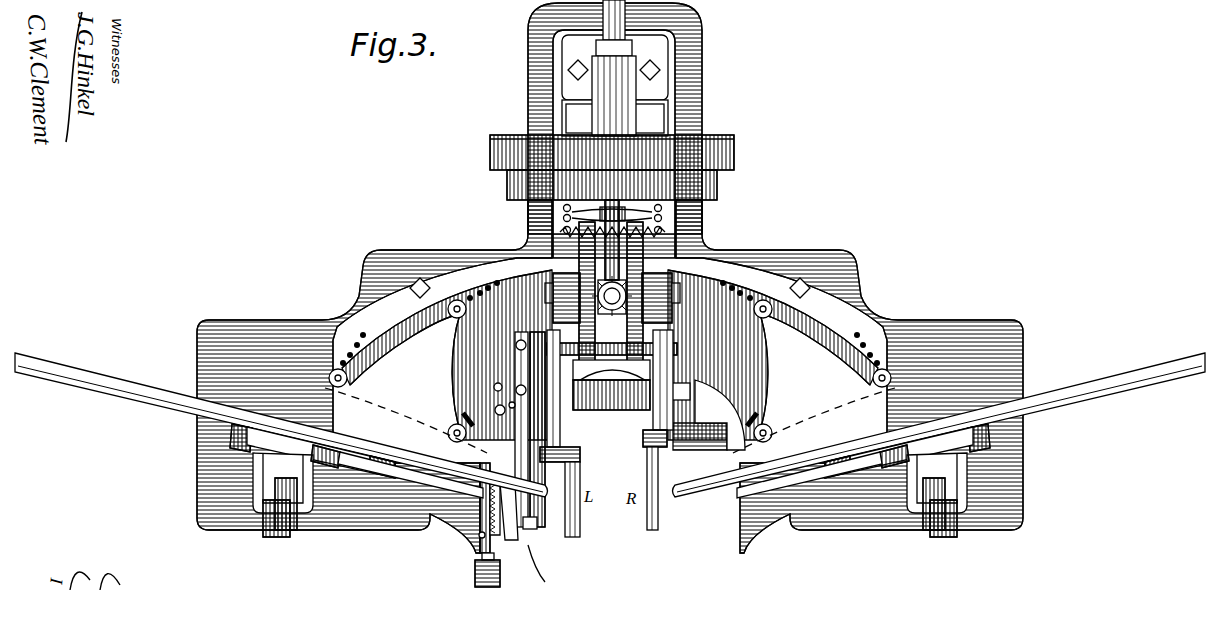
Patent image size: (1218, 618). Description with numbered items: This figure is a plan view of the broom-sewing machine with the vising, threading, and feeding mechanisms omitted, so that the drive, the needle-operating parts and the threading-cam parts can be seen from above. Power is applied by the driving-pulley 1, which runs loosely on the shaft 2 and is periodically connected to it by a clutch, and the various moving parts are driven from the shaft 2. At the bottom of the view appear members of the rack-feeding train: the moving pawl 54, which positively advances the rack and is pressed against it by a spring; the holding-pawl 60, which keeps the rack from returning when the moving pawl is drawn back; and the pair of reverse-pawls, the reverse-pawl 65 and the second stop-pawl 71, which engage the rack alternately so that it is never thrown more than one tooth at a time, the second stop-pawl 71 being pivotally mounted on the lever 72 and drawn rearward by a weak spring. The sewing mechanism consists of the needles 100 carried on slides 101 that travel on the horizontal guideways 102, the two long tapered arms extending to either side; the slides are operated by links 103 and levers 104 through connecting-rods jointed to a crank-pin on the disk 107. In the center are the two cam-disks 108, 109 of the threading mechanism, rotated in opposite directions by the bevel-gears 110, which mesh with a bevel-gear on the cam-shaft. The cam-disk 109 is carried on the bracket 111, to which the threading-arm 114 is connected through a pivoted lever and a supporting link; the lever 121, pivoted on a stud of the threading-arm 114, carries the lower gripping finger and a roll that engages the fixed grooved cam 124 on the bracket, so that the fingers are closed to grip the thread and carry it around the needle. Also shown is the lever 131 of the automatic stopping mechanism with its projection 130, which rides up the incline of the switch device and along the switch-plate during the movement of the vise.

The driving-pulley 1 is at (646, 145).
The shaft 2 is at (600, 120).
The pawl 54 is at (530, 500).
The holding-pawl 60 is at (545, 569).
The reverse-pawl 65 is at (508, 560).
The second stop-pawl 71 is at (481, 545).
The lever 72 is at (477, 523).
The needles 100 is at (440, 488).
The slides 101 is at (302, 414).
The horizontal guideways 102 is at (136, 398).
The links 103 is at (341, 458).
The levers 104 is at (230, 434).
The disk 107 is at (642, 406).
The cam-disk 108 is at (577, 266).
The cam-disk 109 is at (648, 278).
The bevel-gears 110 is at (578, 297).
The bracket 111 is at (663, 368).
The threading-arm 114 is at (649, 415).
The lever 121 is at (682, 428).
The fixed grooved cam 124 is at (672, 395).
The projection 130 is at (528, 530).
The lever 131 is at (545, 528).